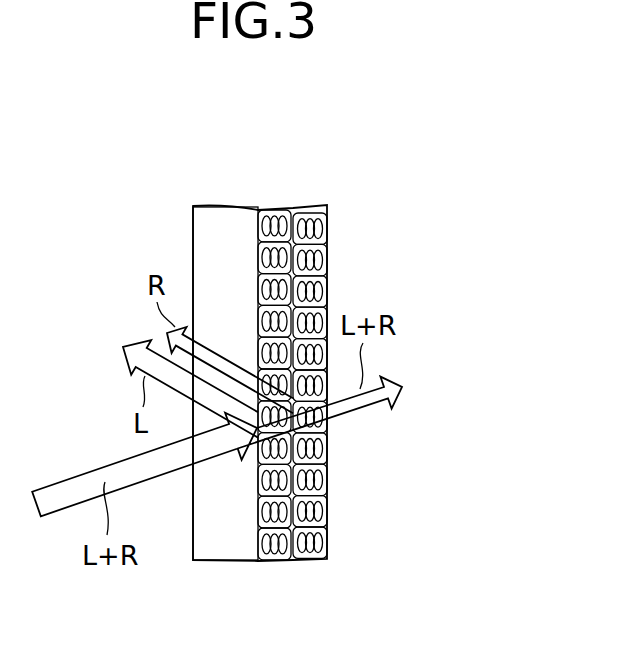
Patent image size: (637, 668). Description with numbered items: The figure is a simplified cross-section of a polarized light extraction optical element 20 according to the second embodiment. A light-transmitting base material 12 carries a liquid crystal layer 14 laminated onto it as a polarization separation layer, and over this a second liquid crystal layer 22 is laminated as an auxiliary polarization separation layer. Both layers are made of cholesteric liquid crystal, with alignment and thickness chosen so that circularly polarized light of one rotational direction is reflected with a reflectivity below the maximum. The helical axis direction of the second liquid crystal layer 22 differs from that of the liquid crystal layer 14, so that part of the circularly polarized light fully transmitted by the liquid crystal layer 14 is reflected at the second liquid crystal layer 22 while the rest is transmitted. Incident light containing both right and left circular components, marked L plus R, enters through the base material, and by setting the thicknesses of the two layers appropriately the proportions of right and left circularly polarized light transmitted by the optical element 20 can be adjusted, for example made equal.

The polarized light extraction optical element 20 is at (262, 368).
The light-transmitting base material 12 is at (222, 552).
The liquid crystal layer 14 is at (282, 550).
The second liquid crystal layer 22 is at (327, 533).